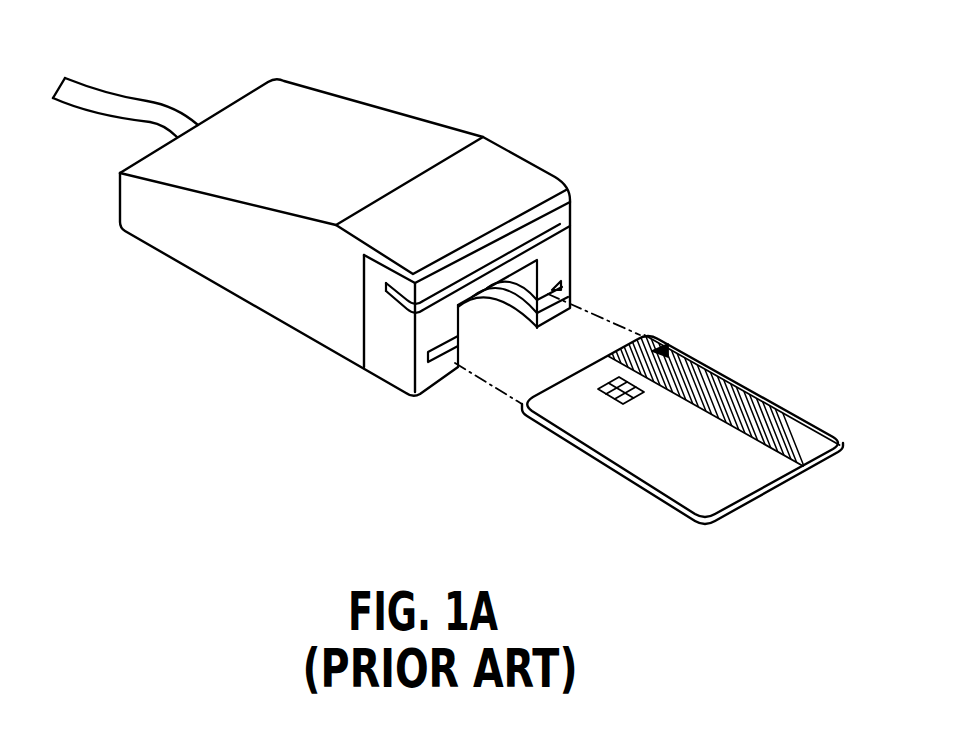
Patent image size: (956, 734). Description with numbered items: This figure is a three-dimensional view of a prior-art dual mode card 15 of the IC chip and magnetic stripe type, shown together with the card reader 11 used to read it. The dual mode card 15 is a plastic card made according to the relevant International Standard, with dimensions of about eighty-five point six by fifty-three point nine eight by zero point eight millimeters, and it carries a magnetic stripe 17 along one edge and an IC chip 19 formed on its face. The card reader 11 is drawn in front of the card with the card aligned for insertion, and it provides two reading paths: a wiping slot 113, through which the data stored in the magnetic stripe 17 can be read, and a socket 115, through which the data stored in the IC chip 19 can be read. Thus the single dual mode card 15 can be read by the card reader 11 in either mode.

The card reader 11 is at (359, 112).
The wiping slot 113 is at (540, 238).
The socket 115 is at (543, 293).
The dual mode card 15 is at (667, 482).
The magnetic stripe 17 is at (737, 410).
The IC chip 19 is at (610, 393).